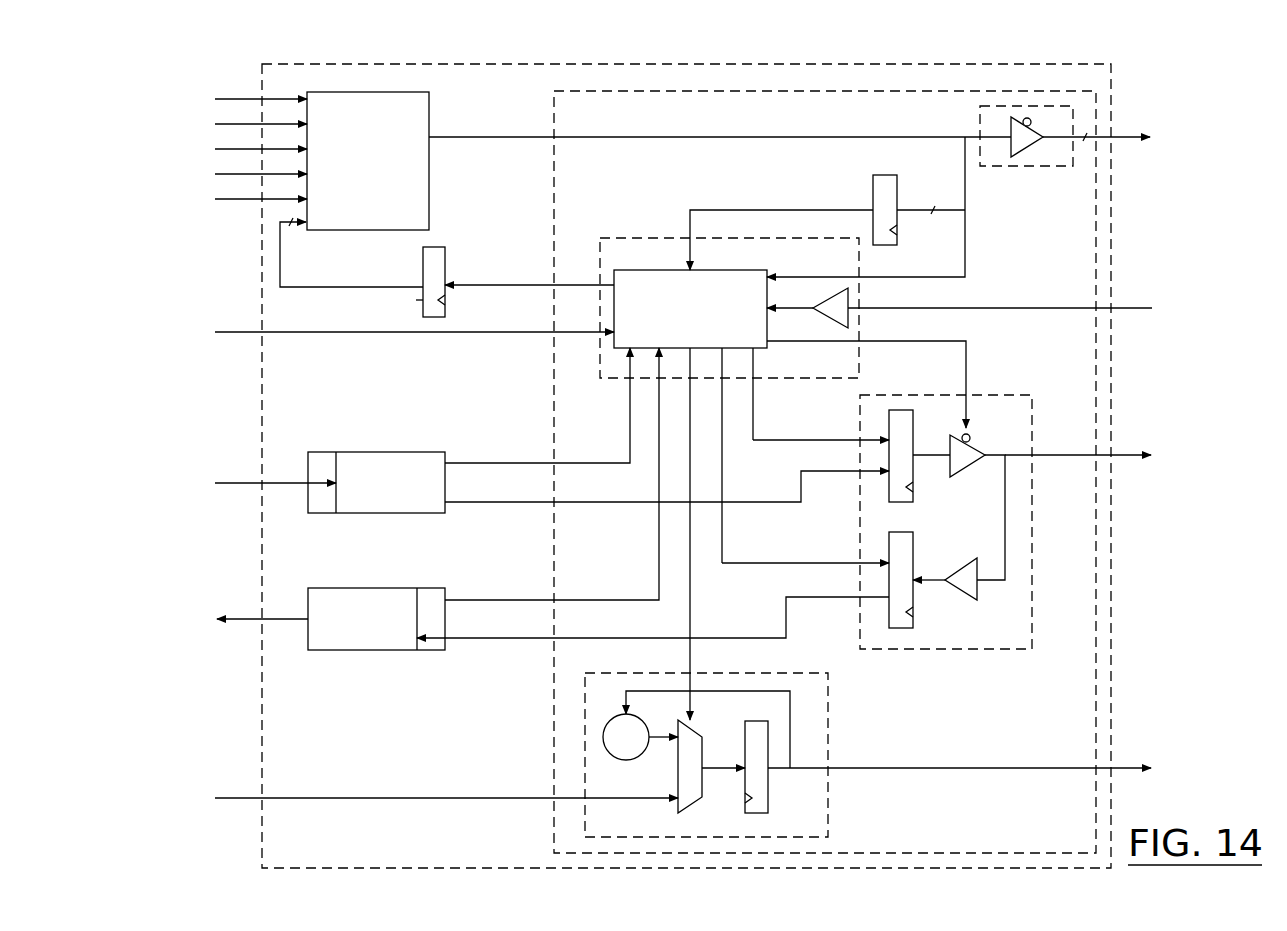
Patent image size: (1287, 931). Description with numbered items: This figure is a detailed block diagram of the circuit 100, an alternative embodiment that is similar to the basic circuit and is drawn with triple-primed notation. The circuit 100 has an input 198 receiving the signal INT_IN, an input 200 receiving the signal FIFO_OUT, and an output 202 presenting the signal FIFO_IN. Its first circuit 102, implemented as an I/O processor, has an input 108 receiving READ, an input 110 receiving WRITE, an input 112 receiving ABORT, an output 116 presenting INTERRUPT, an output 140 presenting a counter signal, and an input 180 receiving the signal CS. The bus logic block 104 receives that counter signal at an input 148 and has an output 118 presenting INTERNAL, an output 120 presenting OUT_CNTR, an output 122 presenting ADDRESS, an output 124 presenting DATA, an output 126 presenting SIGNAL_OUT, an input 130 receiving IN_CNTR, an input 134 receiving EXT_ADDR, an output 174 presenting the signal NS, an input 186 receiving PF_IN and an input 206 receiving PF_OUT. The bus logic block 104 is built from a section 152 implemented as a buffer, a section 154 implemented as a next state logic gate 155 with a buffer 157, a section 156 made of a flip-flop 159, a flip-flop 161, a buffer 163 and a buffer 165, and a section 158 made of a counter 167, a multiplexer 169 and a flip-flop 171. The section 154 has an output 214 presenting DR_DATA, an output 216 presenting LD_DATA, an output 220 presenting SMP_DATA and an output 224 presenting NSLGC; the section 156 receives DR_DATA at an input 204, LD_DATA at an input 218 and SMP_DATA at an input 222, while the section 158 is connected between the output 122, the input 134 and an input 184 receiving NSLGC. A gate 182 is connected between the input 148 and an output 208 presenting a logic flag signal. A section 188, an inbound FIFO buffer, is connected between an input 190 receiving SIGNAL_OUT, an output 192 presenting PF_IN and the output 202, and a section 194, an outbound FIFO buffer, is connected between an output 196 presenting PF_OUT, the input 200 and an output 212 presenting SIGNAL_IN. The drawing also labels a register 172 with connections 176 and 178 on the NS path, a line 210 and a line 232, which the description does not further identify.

The circuit 100 is at (984, 64).
The first circuit 102 is at (398, 92).
The bus logic block 104 is at (1019, 91).
The input 108 is at (262, 97).
The input 110 is at (262, 122).
The input 112 is at (262, 147).
The output 116 is at (262, 172).
The output 118 is at (262, 197).
The output 120 is at (1112, 137).
The output 122 is at (1112, 770).
The output 124 is at (1112, 455).
The output 126 is at (553, 639).
The input 130 is at (1113, 308).
The input 134 is at (262, 798).
The output 140 is at (431, 139).
The input 148 is at (553, 139).
The section 152 is at (1034, 166).
The section 154 is at (789, 238).
The logic gate 155 is at (738, 270).
The section 156 is at (980, 395).
The buffer 157 is at (823, 314).
The section 158 is at (782, 673).
The flip-flop 159 is at (905, 502).
The flip-flop 161 is at (905, 628).
The buffer 163 is at (974, 446).
The buffer 165 is at (971, 598).
The counter 167 is at (619, 760).
The multiplexer 169 is at (687, 810).
The flip-flop 171 is at (756, 813).
The state register 172 is at (440, 247).
The output 174 is at (555, 290).
The state register input 176 is at (450, 297).
The state register output 178 is at (423, 300).
The input 180 is at (303, 228).
The gate 182 is at (890, 175).
The input 184 is at (693, 673).
The input 186 is at (553, 601).
The section 188 is at (384, 588).
The input 190 is at (446, 639).
The output 192 is at (446, 601).
The section 194 is at (389, 452).
The output 196 is at (446, 465).
The input 198 is at (262, 332).
The input 200 is at (261, 482).
The output 202 is at (262, 619).
The input 204 is at (966, 392).
The input 206 is at (553, 464).
The output 208 is at (873, 210).
The LOGF2 line 210 is at (690, 240).
The output 212 is at (446, 503).
The output 214 is at (860, 341).
The output 216 is at (755, 386).
The input 218 is at (861, 447).
The output 220 is at (690, 378).
The input 222 is at (861, 572).
The output 224 is at (722, 378).
The SIGNAL_INI line 232 is at (553, 502).